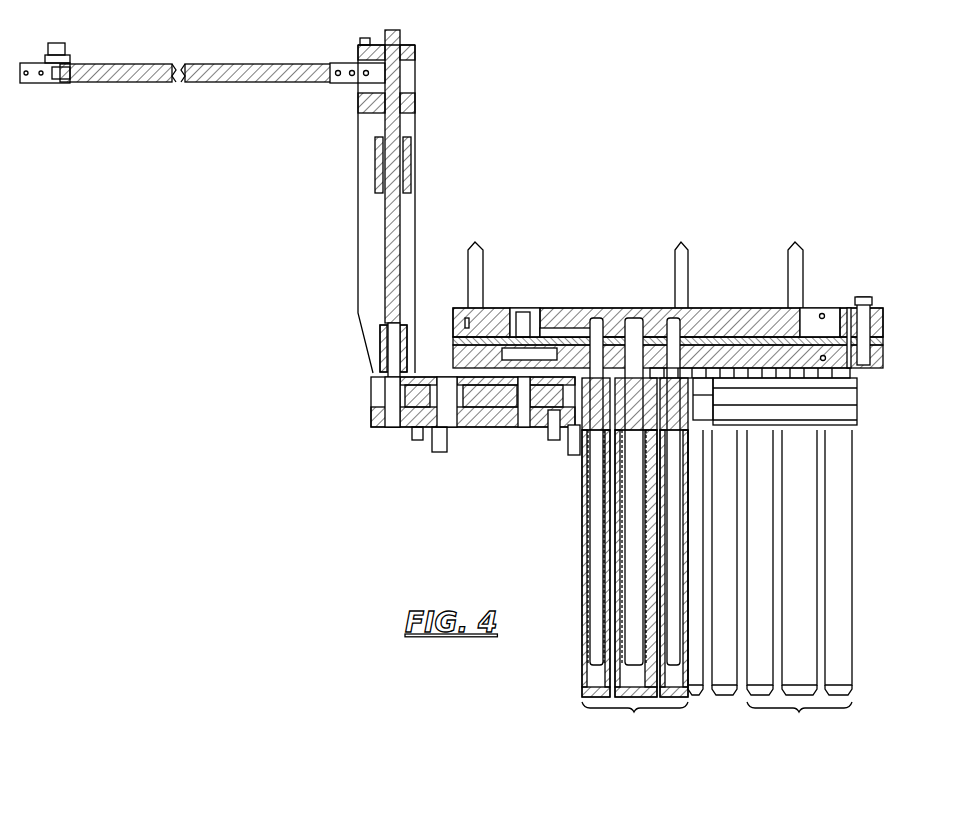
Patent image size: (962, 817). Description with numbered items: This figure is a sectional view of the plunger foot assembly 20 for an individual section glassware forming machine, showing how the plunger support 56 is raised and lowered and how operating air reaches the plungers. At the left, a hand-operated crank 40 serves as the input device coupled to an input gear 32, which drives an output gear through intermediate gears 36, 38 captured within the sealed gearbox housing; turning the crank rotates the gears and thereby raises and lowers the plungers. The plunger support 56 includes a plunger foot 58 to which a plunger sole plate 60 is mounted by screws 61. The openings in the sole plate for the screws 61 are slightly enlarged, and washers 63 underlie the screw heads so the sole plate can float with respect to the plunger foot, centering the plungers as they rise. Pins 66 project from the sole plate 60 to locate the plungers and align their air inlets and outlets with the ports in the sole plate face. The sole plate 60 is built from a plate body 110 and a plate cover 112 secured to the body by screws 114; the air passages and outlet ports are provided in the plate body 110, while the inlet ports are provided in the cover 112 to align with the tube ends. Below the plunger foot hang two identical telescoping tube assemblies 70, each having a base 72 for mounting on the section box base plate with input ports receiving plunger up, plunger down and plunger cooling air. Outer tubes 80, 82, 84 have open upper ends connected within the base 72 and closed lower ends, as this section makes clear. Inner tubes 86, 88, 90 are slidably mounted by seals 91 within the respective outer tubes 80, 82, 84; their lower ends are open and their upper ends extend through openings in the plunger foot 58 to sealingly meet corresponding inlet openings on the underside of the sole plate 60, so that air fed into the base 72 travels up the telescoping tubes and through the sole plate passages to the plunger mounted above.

The plunger foot assembly 20 is at (638, 214).
The input gear 32 is at (372, 402).
The intermediate gear 36 is at (420, 397).
The intermediate gear 38 is at (495, 403).
The hand-operated crank 40 is at (145, 70).
The plunger support 56 is at (693, 299).
The plunger foot 58 is at (886, 355).
The plunger sole plate 60 is at (693, 292).
The screws 61 is at (873, 298).
The washers 63 is at (855, 308).
The pins 66 is at (478, 262).
The telescoping tube assembly 70 is at (717, 717).
The base 72 is at (850, 397).
The outer tube 80 is at (760, 492).
The outer tube 82 is at (805, 528).
The outer tube 84 is at (842, 568).
The inner tube 86 is at (593, 533).
The inner tube 88 is at (620, 563).
The inner tube 90 is at (672, 595).
The seals 91 is at (578, 427).
The plate body 110 is at (577, 308).
The plate cover 112 is at (513, 337).
The screws 114 is at (468, 335).